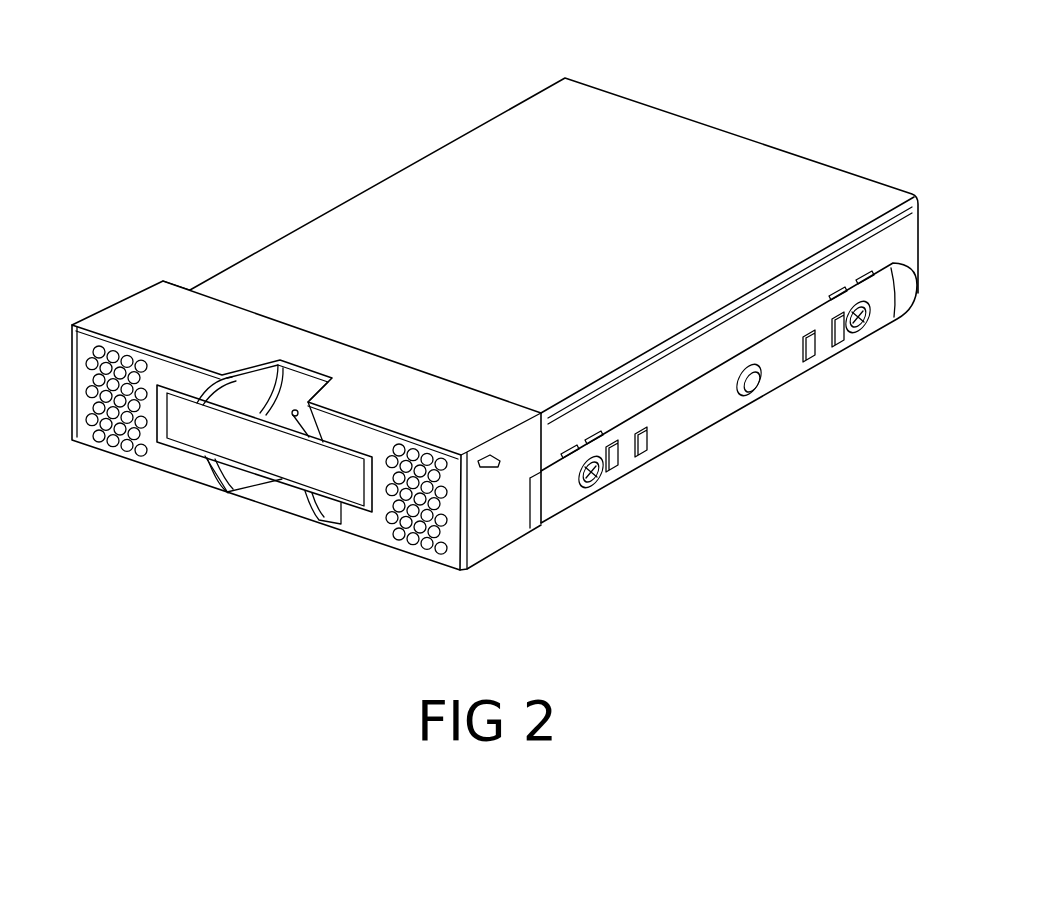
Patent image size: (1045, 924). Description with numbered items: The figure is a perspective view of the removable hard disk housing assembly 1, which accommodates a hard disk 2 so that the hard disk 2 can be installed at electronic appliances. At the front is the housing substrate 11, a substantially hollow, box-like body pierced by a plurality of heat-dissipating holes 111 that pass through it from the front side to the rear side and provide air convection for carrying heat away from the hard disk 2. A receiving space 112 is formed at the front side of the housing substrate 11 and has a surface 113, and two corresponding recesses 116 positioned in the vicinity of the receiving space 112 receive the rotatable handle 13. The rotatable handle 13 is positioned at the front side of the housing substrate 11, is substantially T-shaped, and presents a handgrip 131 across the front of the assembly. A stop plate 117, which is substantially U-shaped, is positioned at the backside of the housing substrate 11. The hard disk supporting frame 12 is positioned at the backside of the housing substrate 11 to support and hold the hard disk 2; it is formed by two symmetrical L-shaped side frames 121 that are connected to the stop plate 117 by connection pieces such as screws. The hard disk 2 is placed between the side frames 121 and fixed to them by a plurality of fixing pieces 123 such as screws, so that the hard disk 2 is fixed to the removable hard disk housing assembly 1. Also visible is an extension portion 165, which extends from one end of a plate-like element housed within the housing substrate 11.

The removable hard disk housing assembly 1 is at (197, 527).
The hard disk 2 is at (712, 127).
The housing substrate 11 is at (497, 559).
The hard disk supporting frame 12 is at (720, 433).
The rotatable handle 13 is at (267, 507).
The heat-dissipating holes 111 is at (113, 440).
The receiving space 112 is at (232, 470).
The surface 113 is at (297, 393).
The recesses 116 is at (185, 397).
The stop plate 117 is at (262, 343).
The side frames 121 is at (770, 367).
The fixing pieces 123 is at (600, 480).
The handgrip 131 is at (343, 485).
The extension portion 165 is at (499, 468).